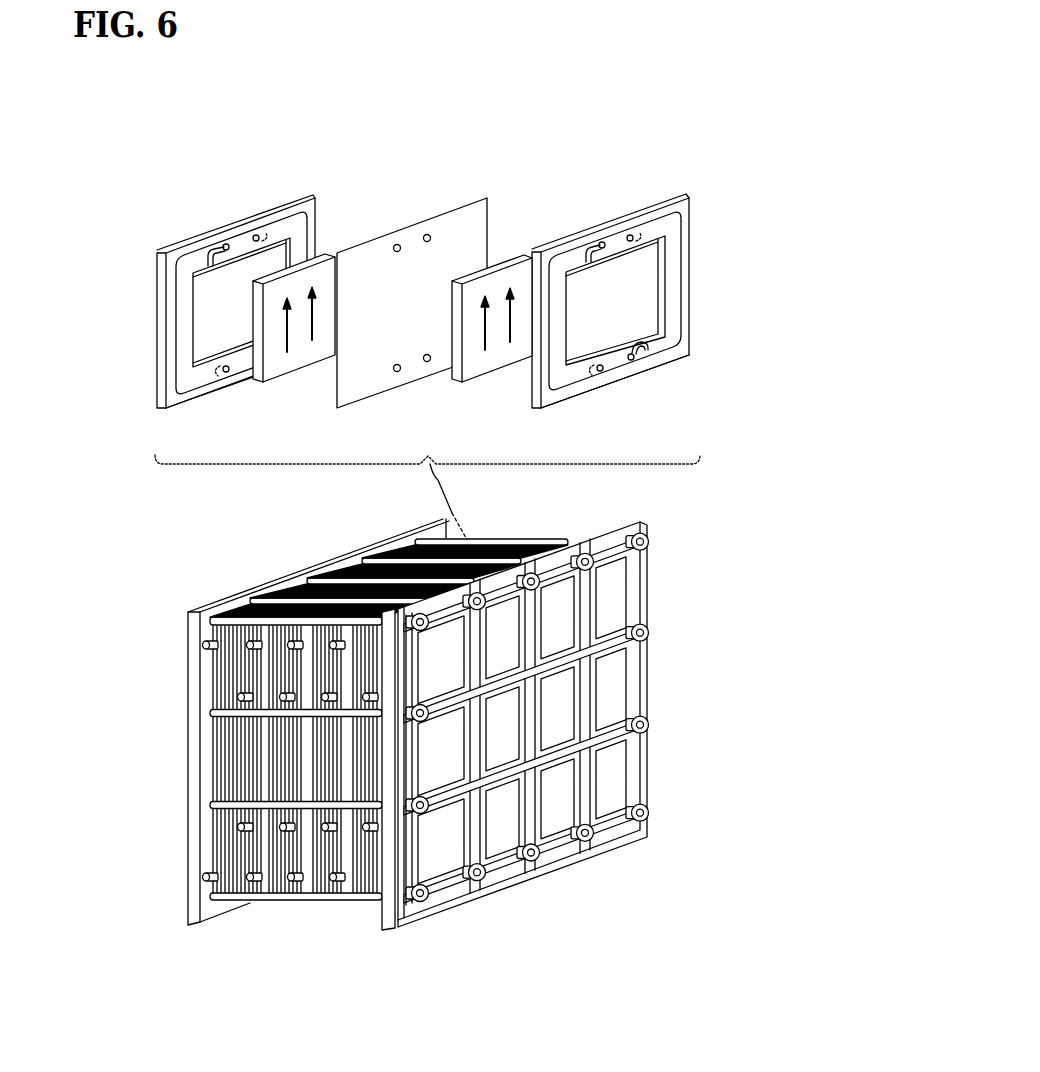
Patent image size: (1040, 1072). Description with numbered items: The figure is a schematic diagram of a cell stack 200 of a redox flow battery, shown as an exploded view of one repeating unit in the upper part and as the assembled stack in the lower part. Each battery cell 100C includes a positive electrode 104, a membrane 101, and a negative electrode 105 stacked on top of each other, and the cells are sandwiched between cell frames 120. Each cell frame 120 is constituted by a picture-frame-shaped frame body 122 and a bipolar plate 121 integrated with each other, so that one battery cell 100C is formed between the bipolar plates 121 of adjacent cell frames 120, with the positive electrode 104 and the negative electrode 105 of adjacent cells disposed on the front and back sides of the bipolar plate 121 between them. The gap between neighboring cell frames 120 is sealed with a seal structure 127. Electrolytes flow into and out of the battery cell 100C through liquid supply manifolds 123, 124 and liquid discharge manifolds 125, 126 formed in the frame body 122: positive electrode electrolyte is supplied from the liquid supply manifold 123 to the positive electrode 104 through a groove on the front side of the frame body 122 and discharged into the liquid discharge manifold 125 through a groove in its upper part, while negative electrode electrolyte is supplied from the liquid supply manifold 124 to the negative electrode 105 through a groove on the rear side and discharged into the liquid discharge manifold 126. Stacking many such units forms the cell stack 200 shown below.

The battery cell 100C is at (395, 259).
The membrane 101 is at (437, 205).
The positive electrode 104 is at (303, 365).
The negative electrode 105 is at (478, 368).
The cell frame 120 is at (424, 297).
The bipolar plate 121 is at (213, 323).
The frame body 122 is at (157, 316).
The liquid supply manifold 123 is at (665, 363).
The liquid supply manifold 124 is at (225, 371).
The liquid discharge manifold 125 is at (227, 247).
The liquid discharge manifold 126 is at (256, 236).
The seal structure 127 is at (317, 222).
The cell stack 200 is at (655, 690).